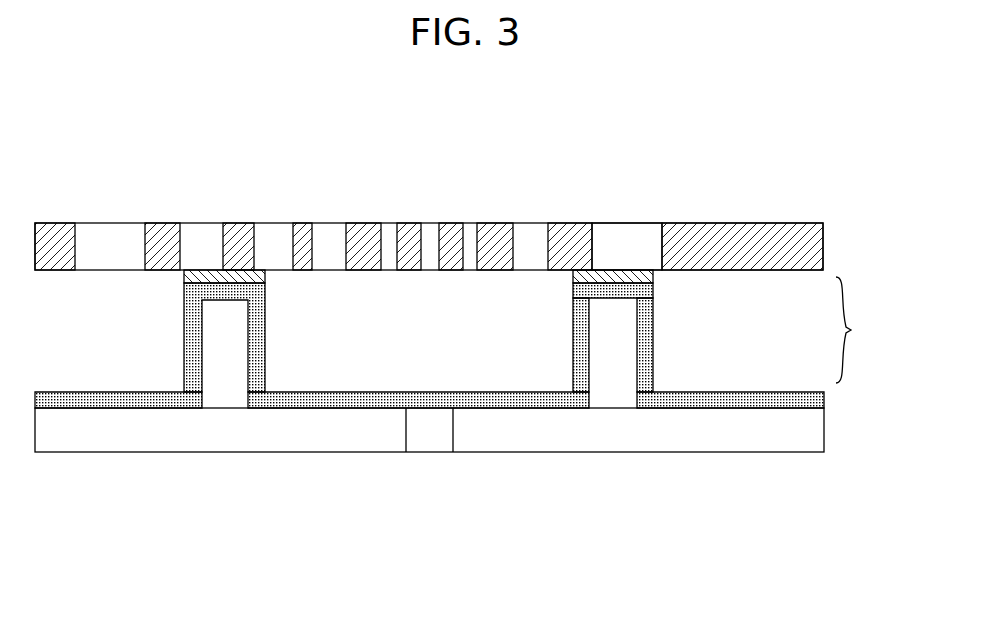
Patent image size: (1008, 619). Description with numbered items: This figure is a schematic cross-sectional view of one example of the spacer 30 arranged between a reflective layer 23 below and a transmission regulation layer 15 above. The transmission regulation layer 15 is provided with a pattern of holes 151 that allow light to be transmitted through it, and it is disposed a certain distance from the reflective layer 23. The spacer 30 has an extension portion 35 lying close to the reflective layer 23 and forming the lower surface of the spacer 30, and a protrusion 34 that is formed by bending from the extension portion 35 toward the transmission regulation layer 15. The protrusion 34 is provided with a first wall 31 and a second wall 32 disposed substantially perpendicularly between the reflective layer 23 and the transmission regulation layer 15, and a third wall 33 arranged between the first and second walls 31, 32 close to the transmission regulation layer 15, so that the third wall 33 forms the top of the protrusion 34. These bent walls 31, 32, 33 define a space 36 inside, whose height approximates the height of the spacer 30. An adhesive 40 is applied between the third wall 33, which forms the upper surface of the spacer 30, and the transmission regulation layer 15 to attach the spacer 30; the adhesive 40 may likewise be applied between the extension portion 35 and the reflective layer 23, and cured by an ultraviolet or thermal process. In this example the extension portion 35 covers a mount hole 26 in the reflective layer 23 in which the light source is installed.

The transmission regulation layer 15 is at (816, 245).
The holes 151 is at (636, 249).
The reflective layer 23 is at (818, 428).
The mount hole 26 is at (442, 437).
The spacer 30 is at (862, 330).
The first wall 31 is at (648, 349).
The second wall 32 is at (578, 347).
The third wall 33 is at (612, 293).
The protrusion 34 is at (415, 387).
The extension portion 35 is at (372, 403).
The space 36 is at (620, 392).
The adhesive 40 is at (650, 279).